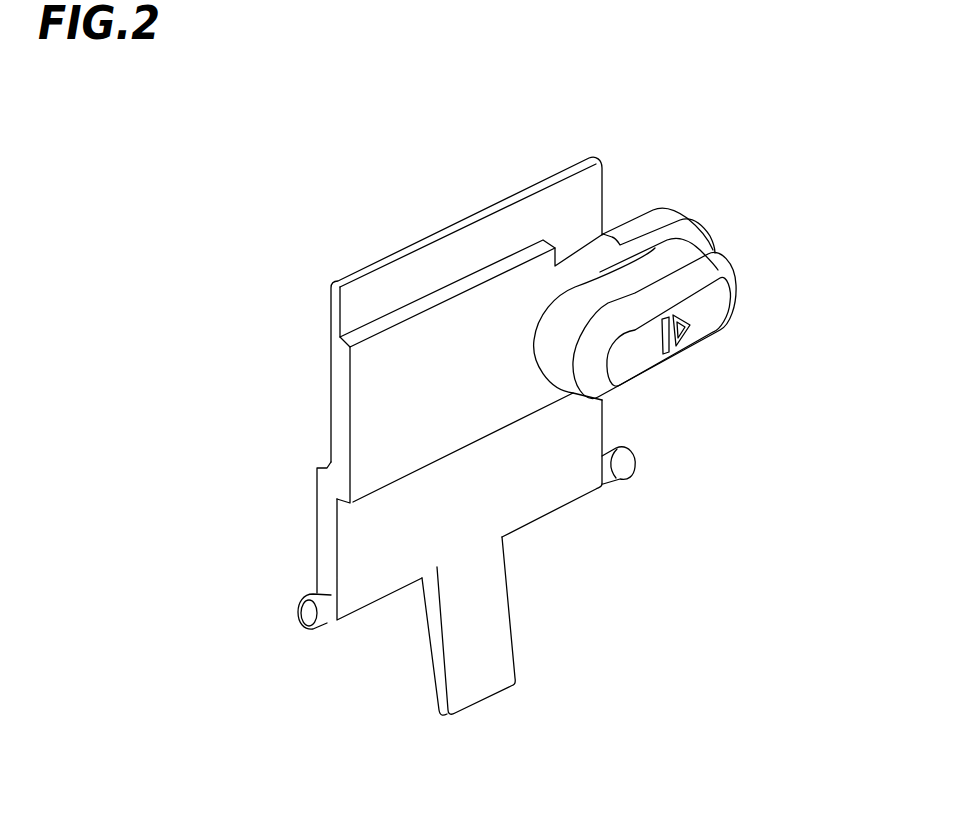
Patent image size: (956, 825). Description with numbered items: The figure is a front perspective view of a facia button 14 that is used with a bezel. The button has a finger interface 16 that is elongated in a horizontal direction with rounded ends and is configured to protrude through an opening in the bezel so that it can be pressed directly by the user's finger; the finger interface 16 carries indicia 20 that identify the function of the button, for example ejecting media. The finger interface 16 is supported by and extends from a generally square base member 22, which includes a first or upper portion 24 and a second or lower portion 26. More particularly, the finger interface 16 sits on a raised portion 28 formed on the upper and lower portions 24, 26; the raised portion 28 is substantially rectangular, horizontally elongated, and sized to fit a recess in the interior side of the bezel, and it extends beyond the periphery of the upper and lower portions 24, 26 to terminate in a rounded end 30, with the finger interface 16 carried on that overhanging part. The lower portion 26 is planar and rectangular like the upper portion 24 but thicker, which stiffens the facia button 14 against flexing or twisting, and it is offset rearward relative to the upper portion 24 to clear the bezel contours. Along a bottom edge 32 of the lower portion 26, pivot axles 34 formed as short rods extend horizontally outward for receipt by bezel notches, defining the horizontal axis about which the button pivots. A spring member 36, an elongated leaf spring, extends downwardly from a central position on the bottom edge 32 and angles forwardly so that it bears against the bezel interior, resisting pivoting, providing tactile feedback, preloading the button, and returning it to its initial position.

The facia button 14 is at (297, 192).
The finger interface 16 is at (705, 322).
The indicia 20 is at (697, 310).
The base member 22 is at (313, 303).
The upper portion 24 is at (564, 208).
The lower portion 26 is at (355, 540).
The raised portion 28 is at (465, 381).
The rounded end 30 is at (715, 246).
The bottom edge 32 is at (517, 547).
The pivot axles 34 is at (328, 624).
The spring member 36 is at (490, 633).